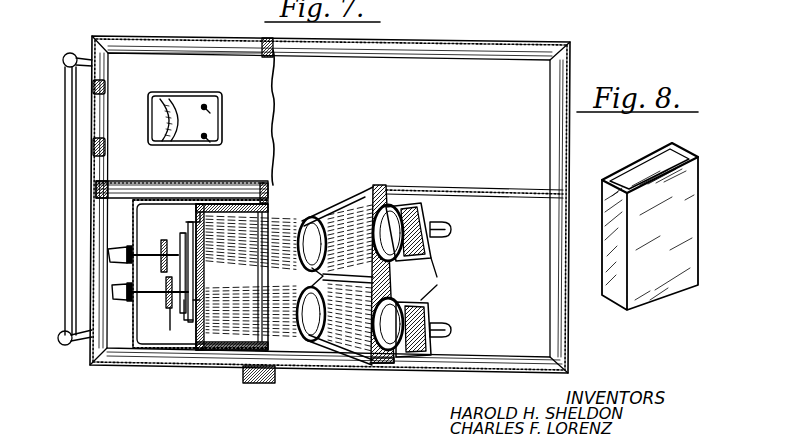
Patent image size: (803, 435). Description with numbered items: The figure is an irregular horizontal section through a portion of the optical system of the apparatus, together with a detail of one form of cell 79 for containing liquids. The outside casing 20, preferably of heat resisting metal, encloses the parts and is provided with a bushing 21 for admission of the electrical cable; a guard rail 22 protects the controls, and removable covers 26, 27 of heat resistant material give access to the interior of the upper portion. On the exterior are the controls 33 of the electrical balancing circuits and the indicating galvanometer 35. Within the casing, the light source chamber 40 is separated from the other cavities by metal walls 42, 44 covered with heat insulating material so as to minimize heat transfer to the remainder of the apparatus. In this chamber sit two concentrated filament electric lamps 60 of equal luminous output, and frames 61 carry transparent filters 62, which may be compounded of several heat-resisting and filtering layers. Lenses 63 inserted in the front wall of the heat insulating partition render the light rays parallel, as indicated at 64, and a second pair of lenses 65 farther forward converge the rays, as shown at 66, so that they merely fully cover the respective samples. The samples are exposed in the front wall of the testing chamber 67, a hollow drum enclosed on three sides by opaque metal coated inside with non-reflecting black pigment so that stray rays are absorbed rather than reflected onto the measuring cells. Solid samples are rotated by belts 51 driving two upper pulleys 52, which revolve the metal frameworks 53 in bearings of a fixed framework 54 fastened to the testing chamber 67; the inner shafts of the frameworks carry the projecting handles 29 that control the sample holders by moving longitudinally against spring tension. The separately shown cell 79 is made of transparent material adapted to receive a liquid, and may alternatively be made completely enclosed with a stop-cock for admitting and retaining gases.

In FIG. 7, the outside casing 20 is at (493, 43).
In FIG. 7, the bushing 21 is at (265, 384).
In FIG. 7, the guard rail 22 is at (69, 172).
In FIG. 7, the removable cover 26 is at (273, 109).
In FIG. 7, the removable cover 27 is at (147, 352).
In FIG. 7, the projecting handles 29 is at (110, 292).
In FIG. 7, the exterior controls of the electrical balancing circuits 33 is at (93, 145).
In FIG. 7, the indicating galvanometer 35 is at (190, 108).
In FIG. 7, the light source chamber 40 is at (518, 309).
In FIG. 7, the wall 42 is at (383, 364).
In FIG. 7, the wall 44 is at (477, 186).
In FIG. 7, the belts 51 is at (170, 309).
In FIG. 7, the upper pulleys 52 is at (162, 247).
In FIG. 7, the metal frameworks 53 is at (200, 247).
In FIG. 7, the fixed framework 54 is at (184, 230).
In FIG. 7, the concentrated filament electric lamps 60 is at (452, 229).
In FIG. 7, the frames 61 is at (442, 279).
In FIG. 7, the transparent filters 62 is at (417, 223).
In FIG. 7, the lenses 63 is at (388, 222).
In FIG. 7, the parallel light rays 64 is at (342, 227).
In FIG. 7, the second pair of lenses 65 is at (308, 227).
In FIG. 7, the converging light rays 66 is at (272, 243).
In FIG. 7, the testing chamber 67 is at (233, 350).
In FIG. 8, the cell 79 is at (662, 272).